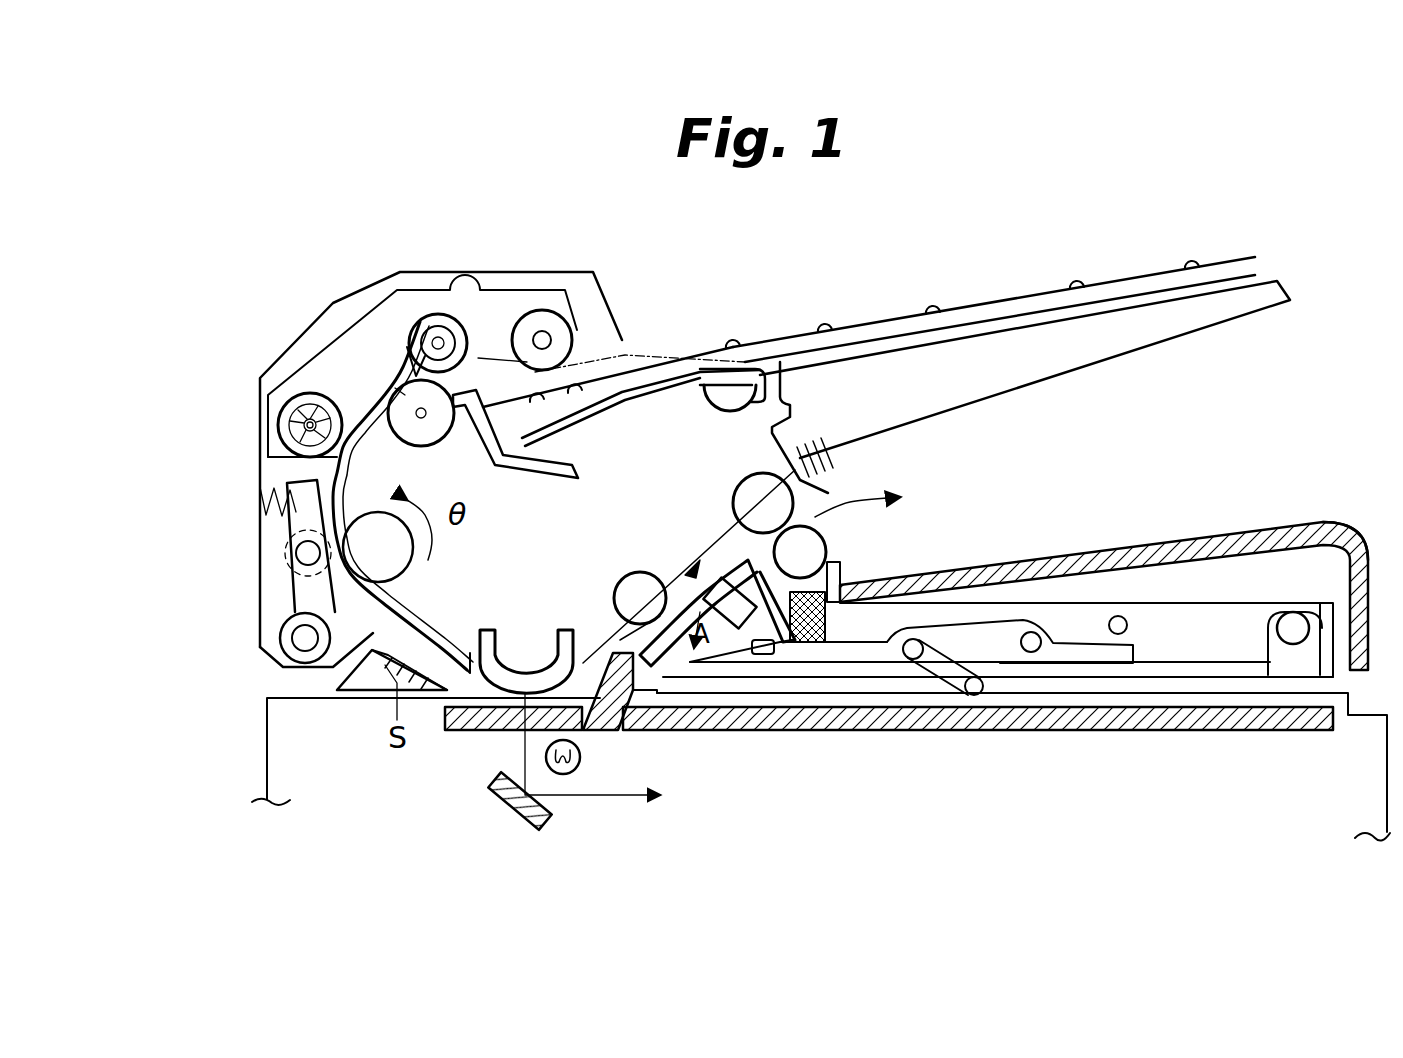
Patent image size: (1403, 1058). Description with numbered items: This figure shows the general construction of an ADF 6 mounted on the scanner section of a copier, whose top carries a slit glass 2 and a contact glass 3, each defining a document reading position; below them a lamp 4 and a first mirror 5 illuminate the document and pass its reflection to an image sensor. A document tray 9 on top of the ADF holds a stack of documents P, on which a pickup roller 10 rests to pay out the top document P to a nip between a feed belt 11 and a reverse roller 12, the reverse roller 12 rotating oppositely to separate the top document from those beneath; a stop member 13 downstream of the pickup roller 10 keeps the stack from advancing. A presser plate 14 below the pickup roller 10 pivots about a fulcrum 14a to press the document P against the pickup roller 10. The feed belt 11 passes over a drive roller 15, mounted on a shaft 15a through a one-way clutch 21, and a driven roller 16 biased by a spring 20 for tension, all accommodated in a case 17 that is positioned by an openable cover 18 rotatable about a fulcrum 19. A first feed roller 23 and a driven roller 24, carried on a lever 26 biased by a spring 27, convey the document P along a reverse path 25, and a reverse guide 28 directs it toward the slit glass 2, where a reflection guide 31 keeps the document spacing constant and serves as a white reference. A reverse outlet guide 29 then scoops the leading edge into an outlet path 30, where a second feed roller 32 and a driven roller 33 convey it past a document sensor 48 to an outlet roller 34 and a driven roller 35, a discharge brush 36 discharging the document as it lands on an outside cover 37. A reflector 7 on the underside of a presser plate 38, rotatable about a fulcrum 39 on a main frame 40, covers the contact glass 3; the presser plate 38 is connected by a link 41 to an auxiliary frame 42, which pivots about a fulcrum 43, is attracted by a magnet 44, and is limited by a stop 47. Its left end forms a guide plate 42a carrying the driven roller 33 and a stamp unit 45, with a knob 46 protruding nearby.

The slit glass 2 is at (478, 734).
The contact glass 3 is at (1085, 730).
The lamp 4 is at (573, 773).
The first mirror 5 is at (510, 815).
The ADF 6 is at (1320, 375).
The reflector 7 is at (1077, 707).
The document tray 9 is at (1278, 281).
The pickup roller 10 is at (548, 318).
The feed belt 11 is at (400, 388).
The reverse roller 12 is at (448, 430).
The stop member 13 is at (535, 320).
The presser plate 14 is at (625, 355).
The fulcrum 14a is at (765, 395).
The drive roller 15 is at (304, 398).
The shaft 15a is at (293, 404).
The driven roller 16 is at (438, 326).
The case 17 is at (404, 355).
The openable cover 18 is at (256, 447).
The fulcrum 19 is at (300, 633).
The spring 20 is at (416, 408).
The one-way clutch 21 is at (305, 425).
The first feed roller 23 is at (397, 563).
The driven roller 24 is at (287, 552).
The reverse path 25 is at (337, 497).
The lever 26 is at (297, 587).
The spring 27 is at (258, 487).
The reverse guide 28 is at (356, 675).
The reverse outlet guide 29 is at (607, 697).
The outlet path 30 is at (627, 640).
The reflection guide 31 is at (550, 647).
The second feed roller 32 is at (630, 577).
The driven roller 33 is at (670, 597).
The outlet roller 34 is at (760, 400).
The driven roller 35 is at (820, 525).
The discharge brush 36 is at (830, 470).
The outside cover 37 is at (1275, 520).
The presser plate 38 is at (1180, 670).
The fulcrum 39 is at (1293, 633).
The main frame 40 is at (1227, 603).
The link 41 is at (950, 690).
The auxiliary frame 42 is at (952, 633).
The guide plate 42a is at (763, 480).
The fulcrum 43 is at (1031, 630).
The magnet 44 is at (810, 587).
The stamp unit 45 is at (745, 662).
The knob 46 is at (775, 660).
The stop 47 is at (1118, 615).
The document sensor 48 is at (683, 573).
The document P is at (1003, 292).